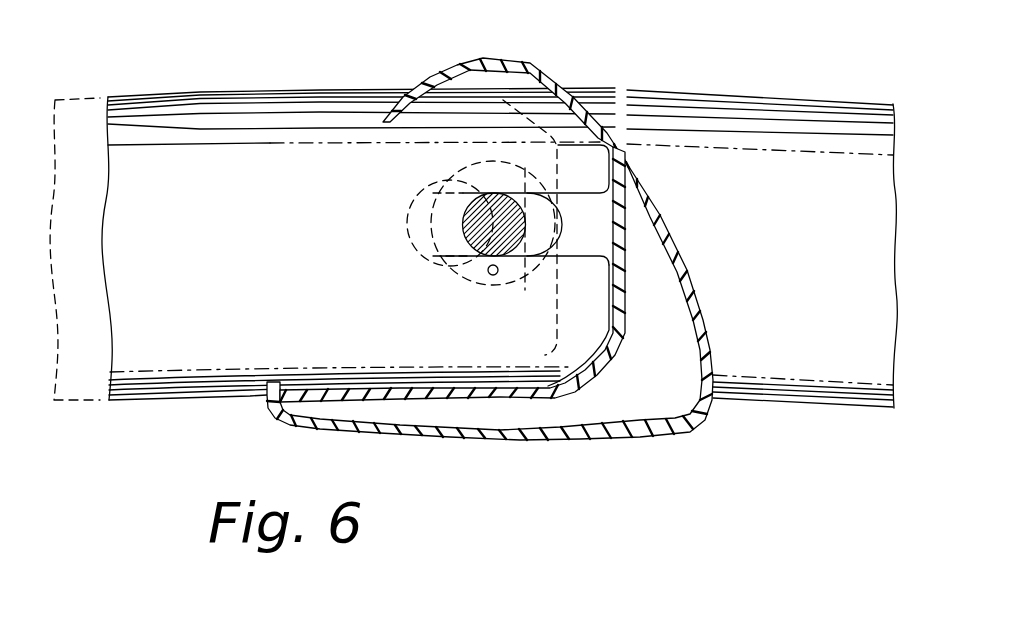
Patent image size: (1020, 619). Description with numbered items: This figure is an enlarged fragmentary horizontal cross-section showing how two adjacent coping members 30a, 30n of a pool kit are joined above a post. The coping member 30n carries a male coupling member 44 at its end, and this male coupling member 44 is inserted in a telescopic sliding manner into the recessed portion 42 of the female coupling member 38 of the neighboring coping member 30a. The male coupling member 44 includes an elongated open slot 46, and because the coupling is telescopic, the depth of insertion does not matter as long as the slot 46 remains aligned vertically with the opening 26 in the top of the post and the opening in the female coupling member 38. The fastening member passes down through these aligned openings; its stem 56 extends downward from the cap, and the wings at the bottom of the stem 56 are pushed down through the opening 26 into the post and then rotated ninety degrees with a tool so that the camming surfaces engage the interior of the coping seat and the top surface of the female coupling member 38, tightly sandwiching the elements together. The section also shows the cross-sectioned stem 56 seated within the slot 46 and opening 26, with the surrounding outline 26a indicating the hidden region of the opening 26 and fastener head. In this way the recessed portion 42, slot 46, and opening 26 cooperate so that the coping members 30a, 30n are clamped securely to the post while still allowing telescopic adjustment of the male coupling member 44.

The coping member 30n is at (200, 128).
The coping member 30a is at (770, 93).
The male coupling member 44 is at (458, 115).
The female coupling member 38 is at (613, 130).
The recessed portion 42 is at (599, 372).
The elongated open slot 46 is at (590, 252).
The opening 26 is at (545, 243).
The fastener head 26a is at (461, 230).
The stem 56 is at (463, 208).